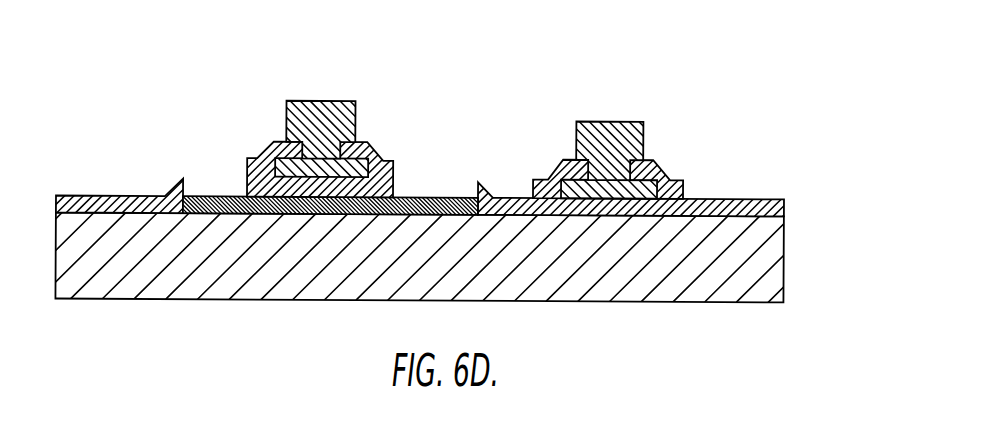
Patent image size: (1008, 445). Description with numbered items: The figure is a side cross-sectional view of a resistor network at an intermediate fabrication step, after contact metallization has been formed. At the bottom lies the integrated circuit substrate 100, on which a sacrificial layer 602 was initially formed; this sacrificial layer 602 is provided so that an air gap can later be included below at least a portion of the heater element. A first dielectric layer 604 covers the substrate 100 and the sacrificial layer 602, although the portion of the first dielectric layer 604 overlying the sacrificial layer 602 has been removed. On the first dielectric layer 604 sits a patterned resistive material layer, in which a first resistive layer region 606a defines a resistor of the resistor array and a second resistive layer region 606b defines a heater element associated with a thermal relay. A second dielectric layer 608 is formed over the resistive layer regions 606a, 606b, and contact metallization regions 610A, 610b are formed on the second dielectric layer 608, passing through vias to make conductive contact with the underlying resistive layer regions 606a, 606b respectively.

The integrated circuit substrate 100 is at (786, 259).
The sacrificial layer 602 is at (425, 195).
The first dielectric layer 604 is at (762, 198).
The first resistive layer region 606a is at (650, 160).
The second resistive layer region 606b is at (367, 140).
The second dielectric layer 608 is at (278, 140).
The contact metallization region 610A is at (313, 99).
The contact metallization region 610b is at (607, 120).